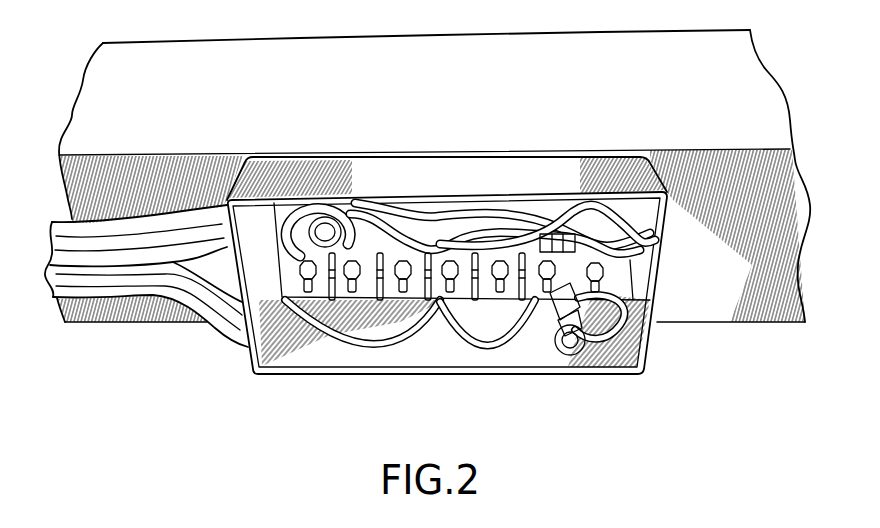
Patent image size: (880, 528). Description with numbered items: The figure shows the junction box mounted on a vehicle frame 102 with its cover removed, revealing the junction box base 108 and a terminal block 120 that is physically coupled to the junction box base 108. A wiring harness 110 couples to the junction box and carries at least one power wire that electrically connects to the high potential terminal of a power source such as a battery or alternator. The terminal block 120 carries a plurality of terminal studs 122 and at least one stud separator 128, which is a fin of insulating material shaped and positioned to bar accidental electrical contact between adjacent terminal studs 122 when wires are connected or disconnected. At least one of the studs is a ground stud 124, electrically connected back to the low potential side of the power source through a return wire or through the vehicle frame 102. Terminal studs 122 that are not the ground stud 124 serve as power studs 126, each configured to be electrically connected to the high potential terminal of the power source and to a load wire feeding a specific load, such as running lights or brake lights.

The vehicle frame 102 is at (629, 129).
The junction box base 108 is at (323, 157).
The wiring harness 110 is at (100, 232).
The terminal block 120 is at (572, 280).
The terminal studs 122 is at (597, 285).
The ground stud 124 is at (457, 255).
The power stud 126 is at (503, 283).
The stud separator 128 is at (473, 284).